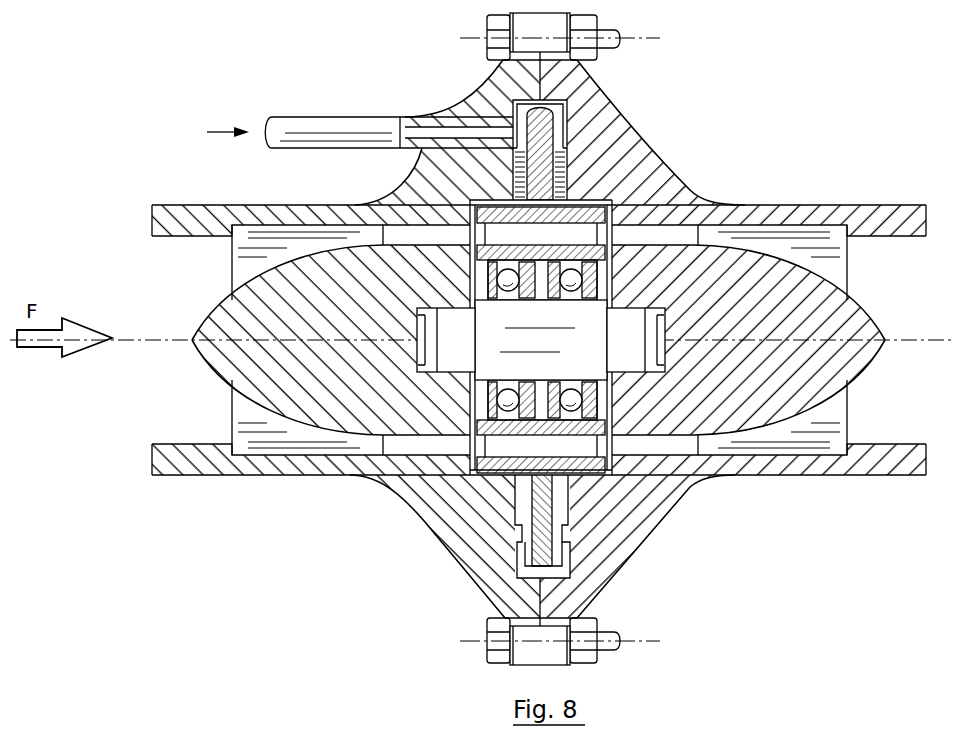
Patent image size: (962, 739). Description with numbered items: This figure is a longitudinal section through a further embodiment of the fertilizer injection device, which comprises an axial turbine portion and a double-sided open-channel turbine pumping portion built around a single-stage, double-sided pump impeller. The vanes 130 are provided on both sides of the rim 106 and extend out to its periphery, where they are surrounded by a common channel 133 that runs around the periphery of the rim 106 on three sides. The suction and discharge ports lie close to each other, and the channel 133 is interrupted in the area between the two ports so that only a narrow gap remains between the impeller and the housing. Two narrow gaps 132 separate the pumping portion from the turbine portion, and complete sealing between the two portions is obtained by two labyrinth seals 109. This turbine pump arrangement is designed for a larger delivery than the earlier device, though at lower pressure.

The rim 106 is at (520, 540).
The labyrinth seal 109 is at (513, 190).
The vanes 130 is at (550, 114).
The narrow gaps 132 is at (515, 112).
The common channel 133 is at (513, 100).